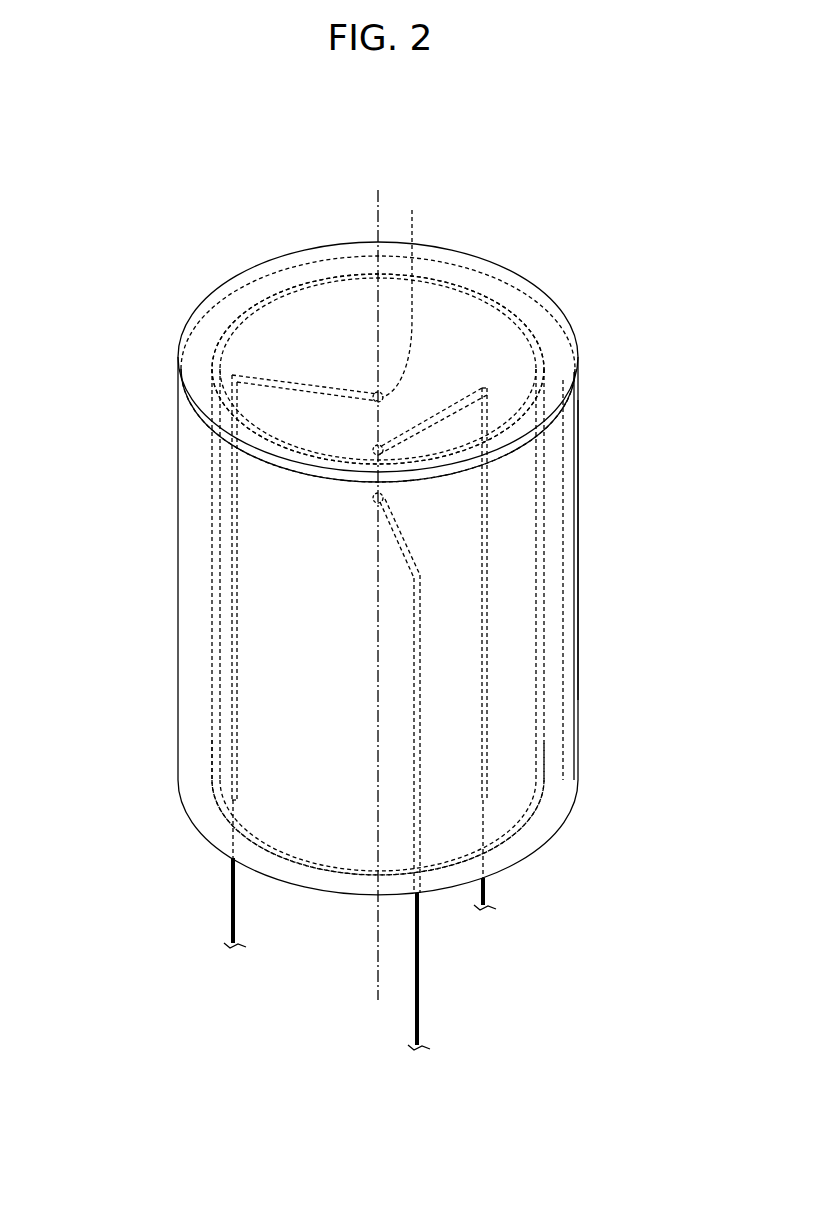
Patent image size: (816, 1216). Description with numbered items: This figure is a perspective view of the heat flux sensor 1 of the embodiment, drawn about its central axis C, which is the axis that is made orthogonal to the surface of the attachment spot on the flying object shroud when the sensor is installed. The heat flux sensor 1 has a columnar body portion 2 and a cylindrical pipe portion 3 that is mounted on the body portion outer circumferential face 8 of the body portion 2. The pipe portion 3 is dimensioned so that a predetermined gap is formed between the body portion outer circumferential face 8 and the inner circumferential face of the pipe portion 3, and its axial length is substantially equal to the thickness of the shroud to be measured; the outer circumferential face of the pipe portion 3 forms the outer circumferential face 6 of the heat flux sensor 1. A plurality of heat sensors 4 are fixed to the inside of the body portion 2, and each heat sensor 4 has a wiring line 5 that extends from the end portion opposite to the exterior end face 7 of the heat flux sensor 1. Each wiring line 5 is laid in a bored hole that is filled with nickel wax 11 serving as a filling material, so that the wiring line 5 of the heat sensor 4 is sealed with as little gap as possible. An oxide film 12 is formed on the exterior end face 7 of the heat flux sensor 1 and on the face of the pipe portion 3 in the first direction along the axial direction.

The heat flux sensor 1 is at (232, 240).
The body portion 2 is at (515, 660).
The pipe portion 3 is at (190, 458).
The heat sensor 4 is at (122, 507).
The wiring line 5 is at (233, 618).
The outer circumferential face 6 is at (580, 481).
The exterior end face 7 is at (265, 335).
The body portion outer circumferential face 8 is at (545, 738).
The nickel wax 11 is at (495, 300).
The oxide film 12 is at (548, 423).
The central axis C is at (378, 215).